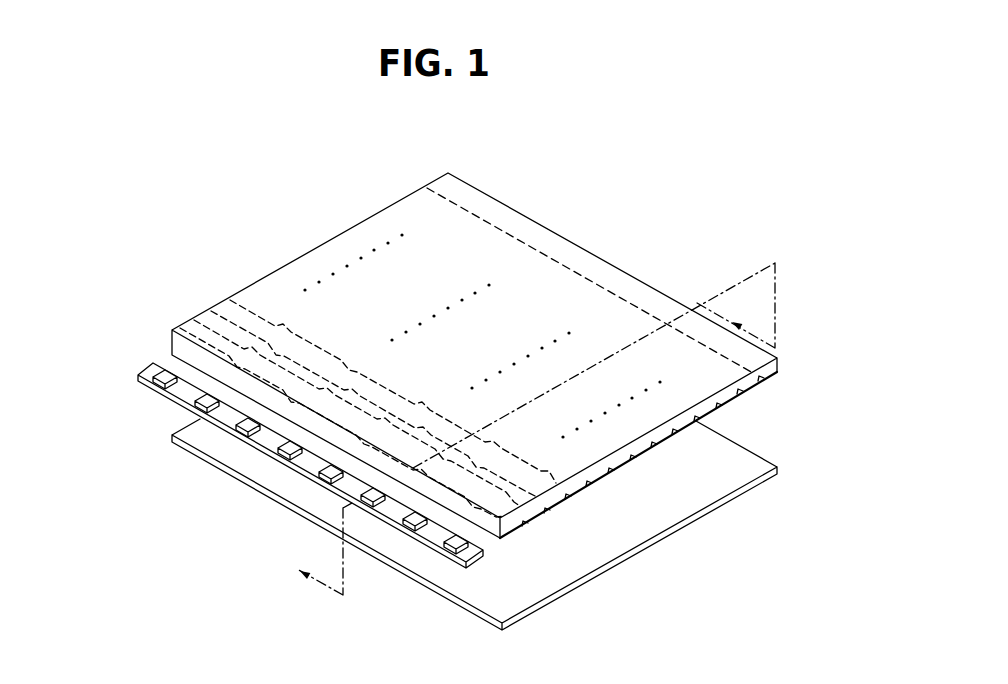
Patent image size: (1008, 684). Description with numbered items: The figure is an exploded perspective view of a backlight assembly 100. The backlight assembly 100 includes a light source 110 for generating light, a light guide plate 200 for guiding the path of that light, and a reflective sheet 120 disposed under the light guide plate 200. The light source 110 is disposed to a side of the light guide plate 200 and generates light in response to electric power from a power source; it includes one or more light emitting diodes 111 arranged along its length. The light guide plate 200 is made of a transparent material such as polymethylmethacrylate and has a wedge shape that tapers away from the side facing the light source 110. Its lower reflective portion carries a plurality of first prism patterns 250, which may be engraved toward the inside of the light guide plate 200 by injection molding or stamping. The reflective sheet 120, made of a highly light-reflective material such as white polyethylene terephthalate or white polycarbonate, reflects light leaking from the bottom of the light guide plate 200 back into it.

The backlight assembly 100 is at (257, 197).
The light source 110 is at (283, 437).
The light emitting diodes 111 is at (160, 372).
The reflective sheet 120 is at (263, 472).
The light guide plate 200 is at (474, 372).
The first prism patterns 250 is at (537, 508).